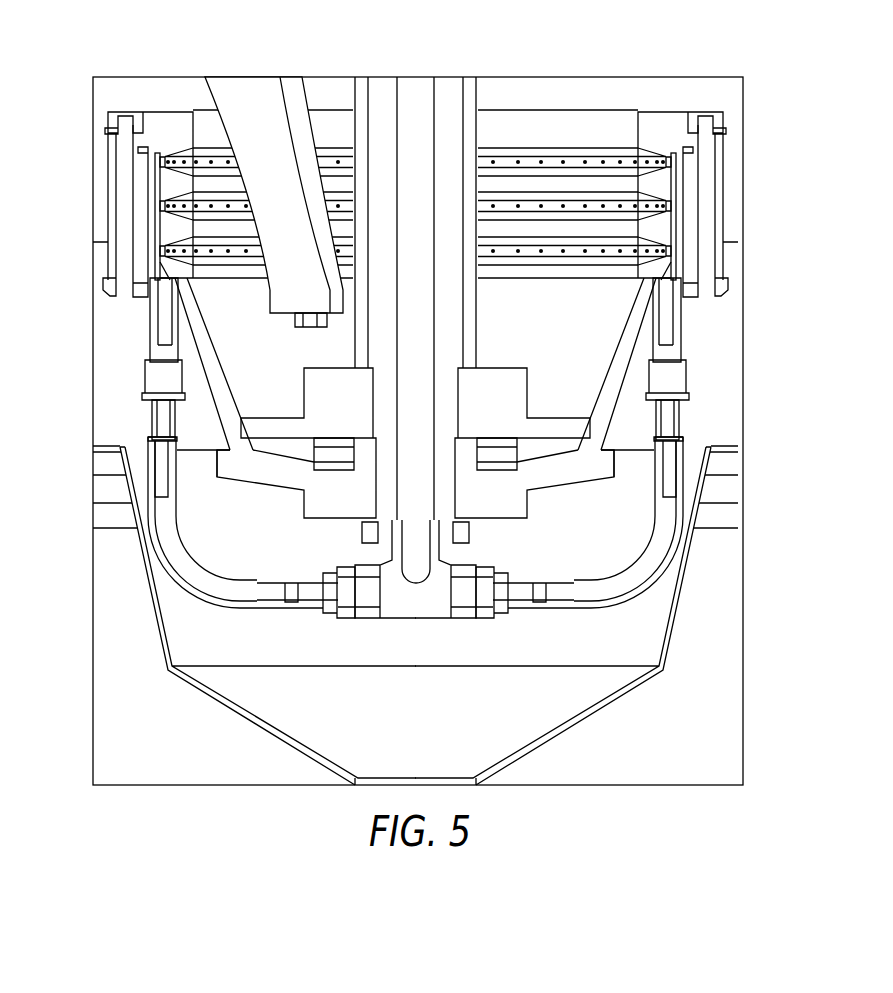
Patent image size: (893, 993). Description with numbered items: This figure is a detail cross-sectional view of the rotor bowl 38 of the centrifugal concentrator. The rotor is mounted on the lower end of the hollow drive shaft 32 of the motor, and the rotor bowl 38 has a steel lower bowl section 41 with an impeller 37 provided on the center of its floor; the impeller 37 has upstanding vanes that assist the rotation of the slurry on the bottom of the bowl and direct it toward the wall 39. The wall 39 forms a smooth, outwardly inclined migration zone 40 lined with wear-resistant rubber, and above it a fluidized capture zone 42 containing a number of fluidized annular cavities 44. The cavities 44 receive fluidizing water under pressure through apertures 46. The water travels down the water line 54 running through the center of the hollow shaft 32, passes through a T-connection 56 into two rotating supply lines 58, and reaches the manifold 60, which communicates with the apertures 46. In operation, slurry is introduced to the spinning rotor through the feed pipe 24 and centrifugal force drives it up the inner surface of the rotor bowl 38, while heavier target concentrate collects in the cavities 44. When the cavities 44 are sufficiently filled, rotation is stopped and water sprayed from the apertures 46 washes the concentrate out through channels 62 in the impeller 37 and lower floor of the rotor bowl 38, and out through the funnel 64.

The feed pipe 24 is at (255, 90).
The hollow drive shaft 32 is at (362, 88).
The water line 54 is at (436, 97).
The apertures 46 is at (620, 160).
The manifold 60 is at (155, 208).
The fluidized capture zone 42 is at (168, 229).
The fluidized annular cavities 44 is at (670, 245).
The steel lower bowl section 41 is at (652, 316).
The wall 39 is at (628, 331).
The impeller 37 is at (500, 398).
The channels 62 is at (500, 453).
The migration zone 40 is at (228, 364).
The rotor bowl 38 is at (230, 467).
The rotating supply lines 58 is at (162, 485).
The funnel 64 is at (663, 585).
The T-connection 56 is at (403, 593).